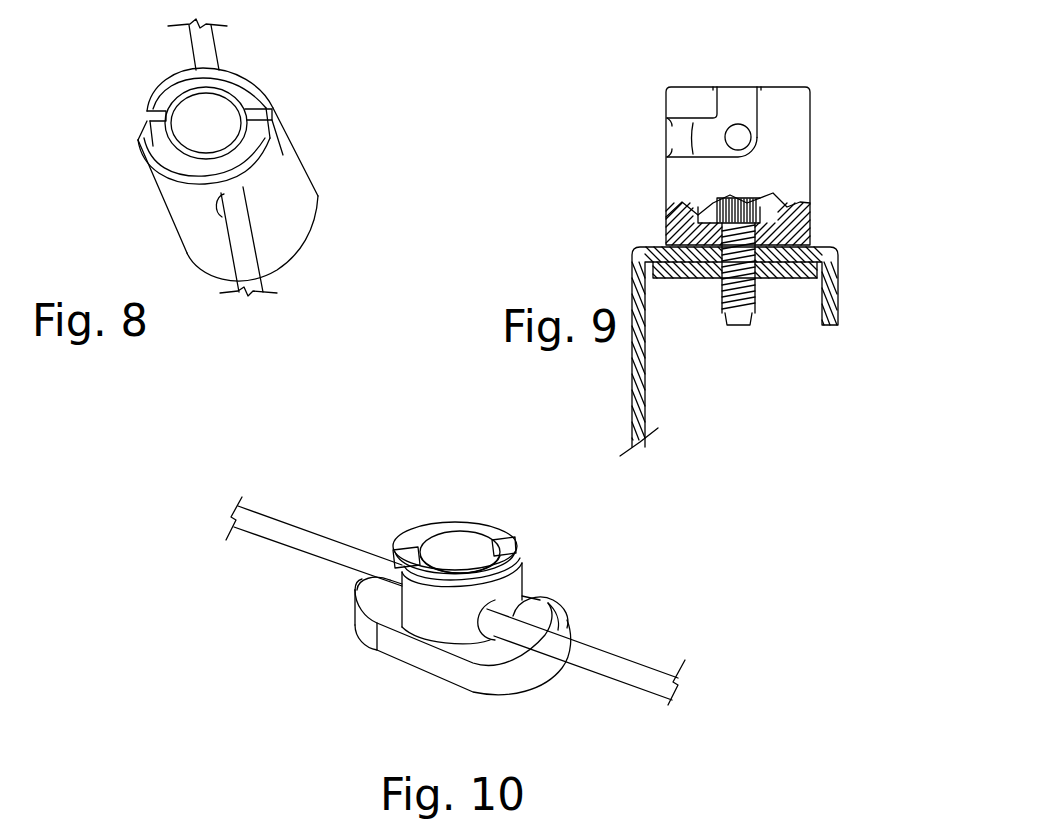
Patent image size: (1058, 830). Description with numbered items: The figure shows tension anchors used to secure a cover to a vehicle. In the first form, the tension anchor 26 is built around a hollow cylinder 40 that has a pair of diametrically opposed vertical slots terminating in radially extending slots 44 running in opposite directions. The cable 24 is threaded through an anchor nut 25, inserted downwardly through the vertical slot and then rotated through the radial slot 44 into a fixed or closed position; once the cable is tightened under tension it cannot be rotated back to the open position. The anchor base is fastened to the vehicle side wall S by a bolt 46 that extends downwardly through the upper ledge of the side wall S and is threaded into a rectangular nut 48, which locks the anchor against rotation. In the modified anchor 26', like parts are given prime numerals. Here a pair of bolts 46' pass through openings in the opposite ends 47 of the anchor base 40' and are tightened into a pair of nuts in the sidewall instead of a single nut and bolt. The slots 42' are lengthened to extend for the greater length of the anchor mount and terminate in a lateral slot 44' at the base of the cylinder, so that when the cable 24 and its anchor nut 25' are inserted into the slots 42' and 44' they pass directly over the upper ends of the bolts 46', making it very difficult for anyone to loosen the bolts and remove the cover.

In FIG. 8, the cable 24 is at (190, 50).
In FIG. 9, the cable 24 is at (745, 137).
In FIG. 10, the cable 24 is at (285, 518).
In FIG. 8, the anchor nut 25 is at (260, 95).
In FIG. 9, the anchor nut 25 is at (761, 69).
In FIG. 9, the tension anchor 26 is at (676, 136).
In FIG. 8, the hollow cylinder 40 is at (193, 174).
In FIG. 9, the radially extending slot 44 is at (644, 130).
In FIG. 9, the bolt 46 is at (679, 211).
In FIG. 9, the rectangular nut 48 is at (653, 270).
In FIG. 9, the side wall S is at (833, 252).
In FIG. 10, the anchor base 40' is at (435, 669).
In FIG. 10, the slots 42' is at (477, 504).
In FIG. 10, the anchor nut 25' is at (460, 502).
In FIG. 10, the modified anchor 26' is at (483, 521).
In FIG. 10, the lateral slot 44' is at (575, 596).
In FIG. 10, the bolts 46' is at (426, 669).
In FIG. 10, the opposite ends 47 is at (355, 630).